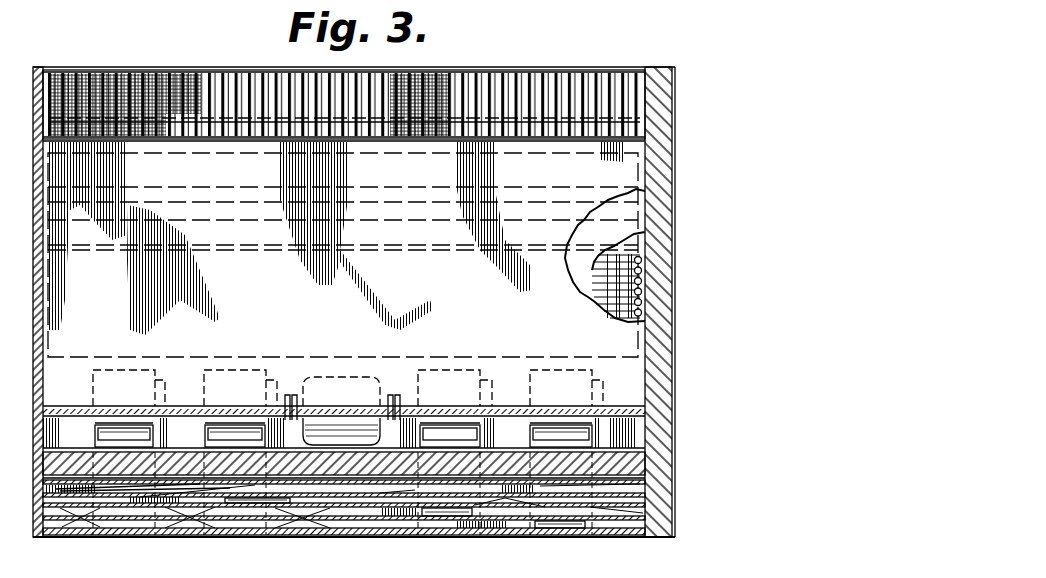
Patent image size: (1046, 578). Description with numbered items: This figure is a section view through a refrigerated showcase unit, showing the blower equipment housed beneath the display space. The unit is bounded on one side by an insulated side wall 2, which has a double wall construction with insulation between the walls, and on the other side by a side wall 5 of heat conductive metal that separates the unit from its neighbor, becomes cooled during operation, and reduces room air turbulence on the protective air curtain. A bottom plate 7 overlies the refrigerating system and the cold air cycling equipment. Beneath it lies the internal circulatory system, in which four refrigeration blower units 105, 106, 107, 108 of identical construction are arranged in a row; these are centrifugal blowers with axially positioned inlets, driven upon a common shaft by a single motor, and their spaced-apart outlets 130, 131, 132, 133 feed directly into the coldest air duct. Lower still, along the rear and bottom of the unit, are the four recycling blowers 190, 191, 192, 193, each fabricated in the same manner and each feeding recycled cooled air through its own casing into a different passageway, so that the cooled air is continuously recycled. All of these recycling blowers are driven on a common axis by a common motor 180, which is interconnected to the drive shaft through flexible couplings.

The insulated side wall 2 is at (674, 291).
The side wall 5 is at (34, 292).
The bottom plate 7 is at (331, 301).
The refrigeration blower unit 105 is at (553, 378).
The refrigeration blower unit 106 is at (441, 378).
The refrigeration blower unit 107 is at (233, 376).
The refrigeration blower unit 108 is at (133, 376).
The blower outlet 130 is at (600, 433).
The blower outlet 131 is at (544, 435).
The blower outlet 132 is at (205, 437).
The blower outlet 133 is at (90, 437).
The common motor 180 is at (306, 522).
The recycling blower 190 is at (578, 537).
The recycling blower 191 is at (410, 532).
The recycling blower 192 is at (197, 526).
The recycling blower 193 is at (92, 526).